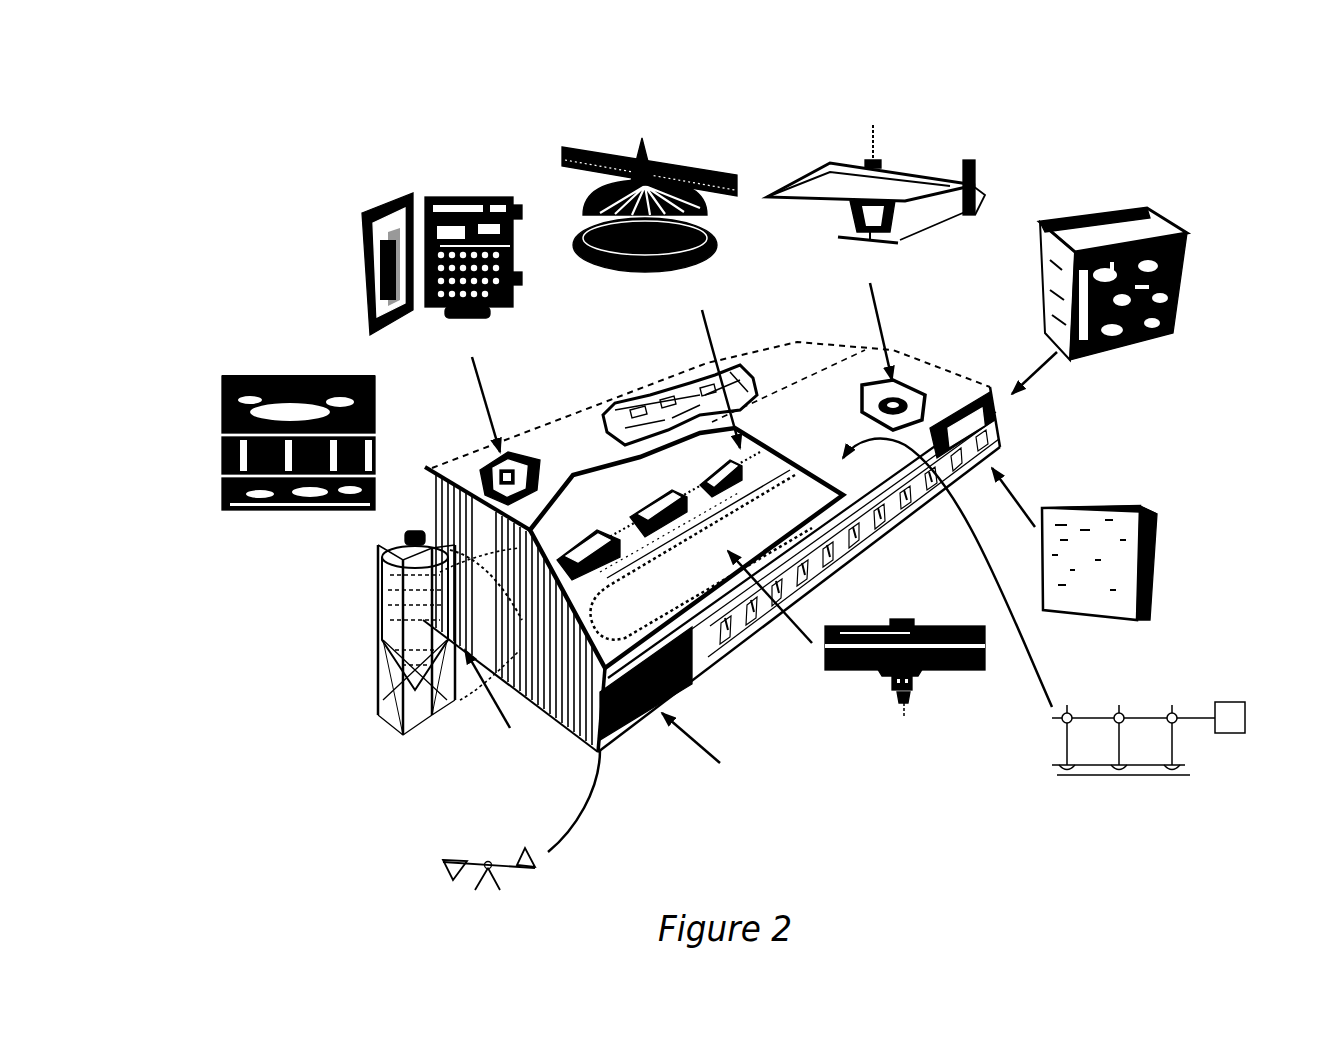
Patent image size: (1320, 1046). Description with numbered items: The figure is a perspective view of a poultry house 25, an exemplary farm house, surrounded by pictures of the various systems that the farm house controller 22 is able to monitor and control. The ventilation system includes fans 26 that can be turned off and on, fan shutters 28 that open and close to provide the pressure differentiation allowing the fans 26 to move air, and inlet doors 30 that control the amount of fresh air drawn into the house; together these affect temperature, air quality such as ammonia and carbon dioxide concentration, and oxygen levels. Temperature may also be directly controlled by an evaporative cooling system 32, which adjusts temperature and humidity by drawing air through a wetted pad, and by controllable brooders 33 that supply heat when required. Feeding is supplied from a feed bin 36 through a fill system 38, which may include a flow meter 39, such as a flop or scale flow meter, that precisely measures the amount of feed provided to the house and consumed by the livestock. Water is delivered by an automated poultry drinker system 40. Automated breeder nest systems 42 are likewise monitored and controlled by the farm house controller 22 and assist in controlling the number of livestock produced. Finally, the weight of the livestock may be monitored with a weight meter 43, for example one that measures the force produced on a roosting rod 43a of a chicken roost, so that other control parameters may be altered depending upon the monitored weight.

The farm house controller 22 is at (473, 190).
The poultry house 25 is at (1082, 128).
The fans 26 is at (1178, 297).
The fan shutters 28 is at (1155, 562).
The inlet doors 30 is at (631, 400).
The evaporative cooling system 32 is at (792, 798).
The brooders 33 is at (678, 173).
The feed bin 36 is at (365, 607).
The fill system 38 is at (493, 702).
The flow meter 39 is at (410, 856).
The automated poultry drinker system 40 is at (957, 745).
The breeder nest systems 42 is at (902, 165).
The weight meter 43 is at (1232, 734).
The roosting rod 43a is at (1148, 777).